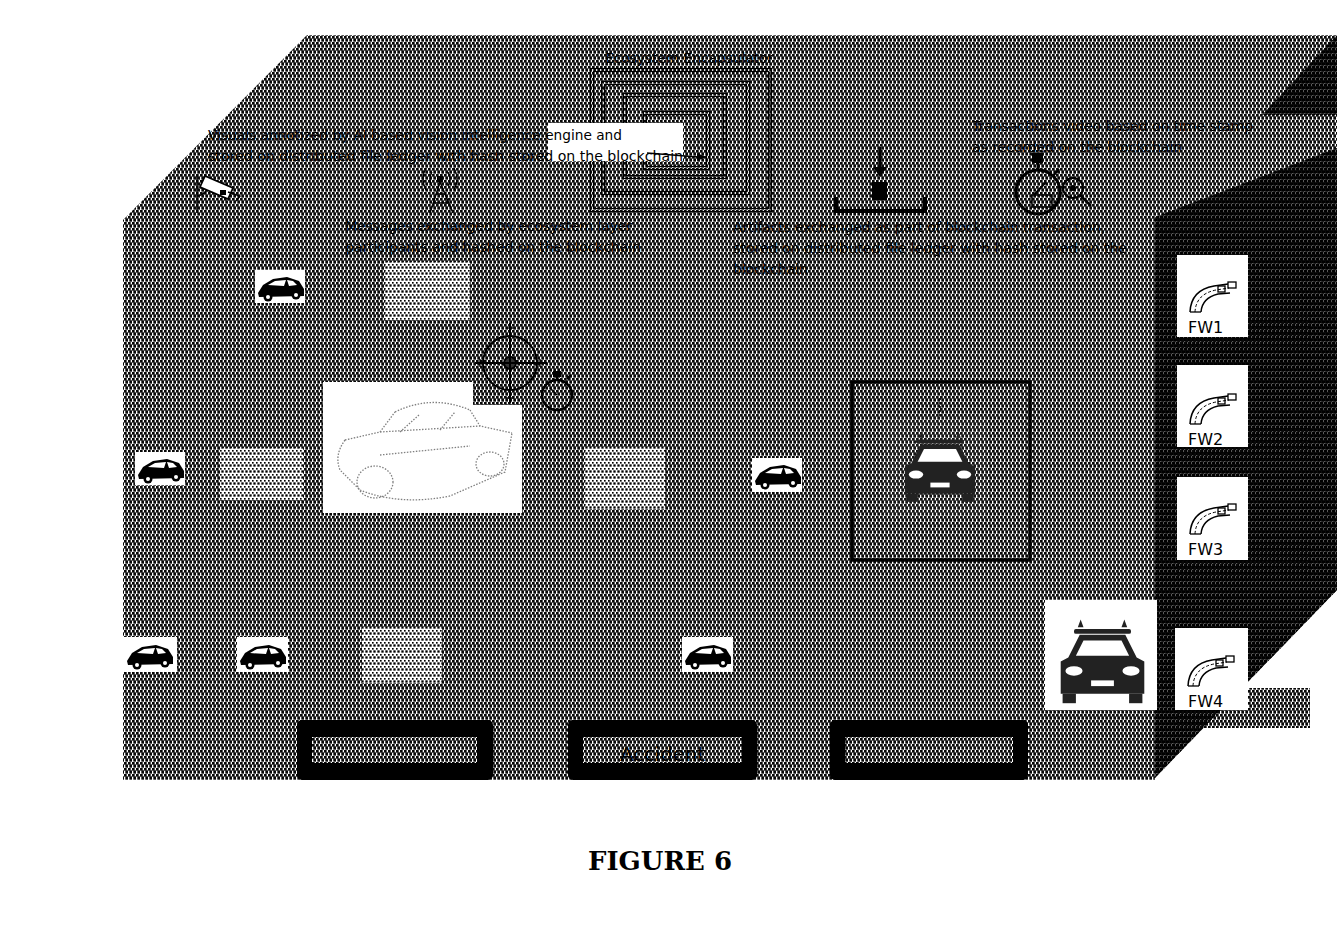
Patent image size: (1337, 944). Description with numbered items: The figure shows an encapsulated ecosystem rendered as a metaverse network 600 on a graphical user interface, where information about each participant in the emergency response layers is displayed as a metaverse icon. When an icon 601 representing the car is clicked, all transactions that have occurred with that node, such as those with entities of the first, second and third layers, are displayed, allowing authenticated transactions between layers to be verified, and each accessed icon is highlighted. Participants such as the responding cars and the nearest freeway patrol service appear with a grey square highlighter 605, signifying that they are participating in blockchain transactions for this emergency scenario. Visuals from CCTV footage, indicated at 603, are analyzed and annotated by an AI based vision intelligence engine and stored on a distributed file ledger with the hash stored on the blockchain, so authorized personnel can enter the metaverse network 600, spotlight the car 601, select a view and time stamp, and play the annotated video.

The metaverse network 600 is at (114, 47).
The icon 601 is at (437, 383).
The camera of AI based vision intelligence engine 603 is at (237, 183).
The highlighter 605 is at (1025, 483).